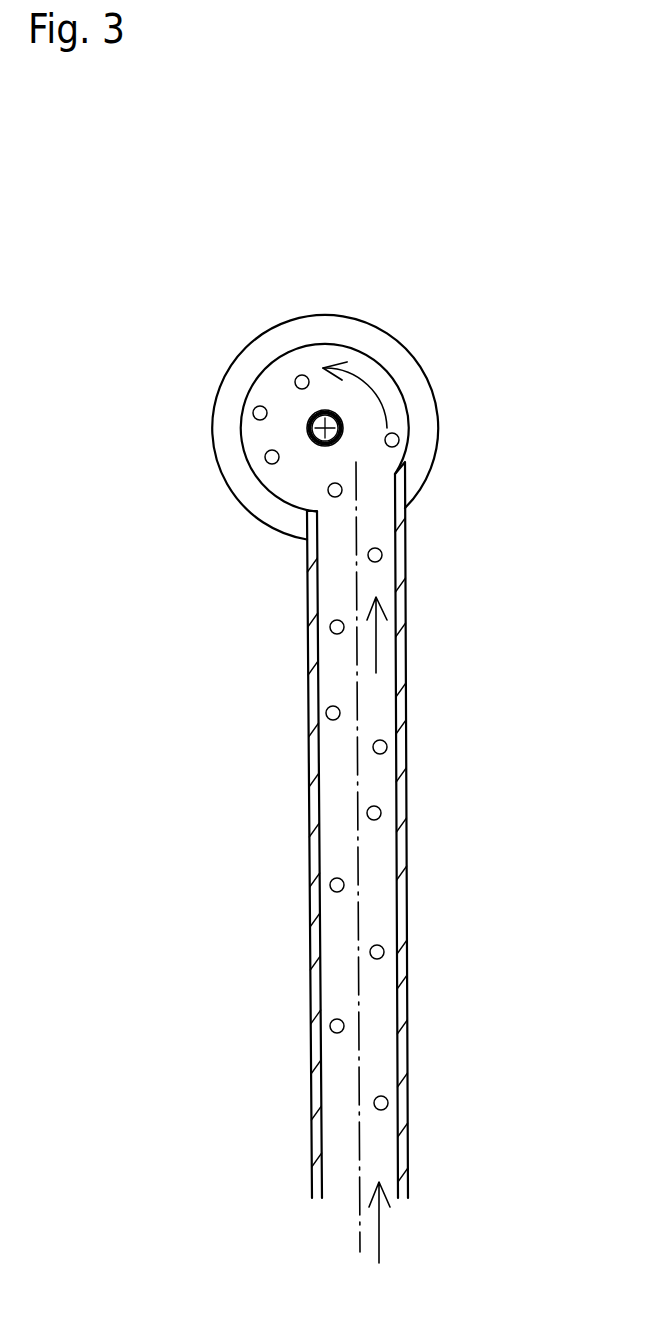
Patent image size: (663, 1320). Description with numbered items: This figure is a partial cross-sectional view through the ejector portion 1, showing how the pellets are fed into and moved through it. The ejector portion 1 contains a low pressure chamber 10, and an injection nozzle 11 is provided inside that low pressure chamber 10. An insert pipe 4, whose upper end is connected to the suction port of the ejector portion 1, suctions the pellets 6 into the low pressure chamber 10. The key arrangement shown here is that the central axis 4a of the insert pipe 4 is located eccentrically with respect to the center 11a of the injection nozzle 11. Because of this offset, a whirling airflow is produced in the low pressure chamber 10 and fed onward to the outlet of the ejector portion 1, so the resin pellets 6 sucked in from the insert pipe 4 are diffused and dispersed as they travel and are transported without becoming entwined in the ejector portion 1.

The ejector portion 1 is at (380, 345).
The insert pipe 4 is at (407, 657).
The central axis 4a is at (358, 873).
The pellets 6 is at (298, 377).
The low pressure chamber 10 is at (392, 397).
The injection nozzle 11 is at (308, 428).
The center 11a is at (313, 442).